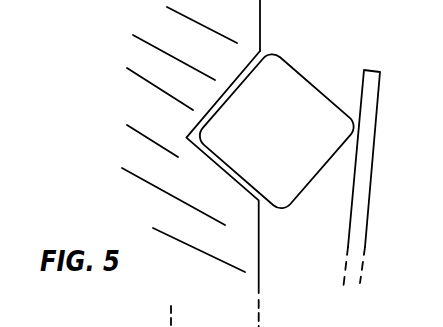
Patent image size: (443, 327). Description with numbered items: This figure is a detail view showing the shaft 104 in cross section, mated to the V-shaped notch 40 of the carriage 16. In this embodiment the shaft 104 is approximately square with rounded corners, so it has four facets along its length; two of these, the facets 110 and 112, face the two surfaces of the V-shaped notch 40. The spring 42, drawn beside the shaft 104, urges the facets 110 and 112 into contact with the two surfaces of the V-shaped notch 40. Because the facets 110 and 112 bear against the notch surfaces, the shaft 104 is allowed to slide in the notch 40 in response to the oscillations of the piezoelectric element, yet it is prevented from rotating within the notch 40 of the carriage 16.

The carriage 16 is at (278, 0).
The facet 112 is at (208, 92).
The V-shaped notch 40 is at (206, 158).
The facet 110 is at (238, 178).
The shaft 104 is at (279, 137).
The spring 42 is at (373, 140).